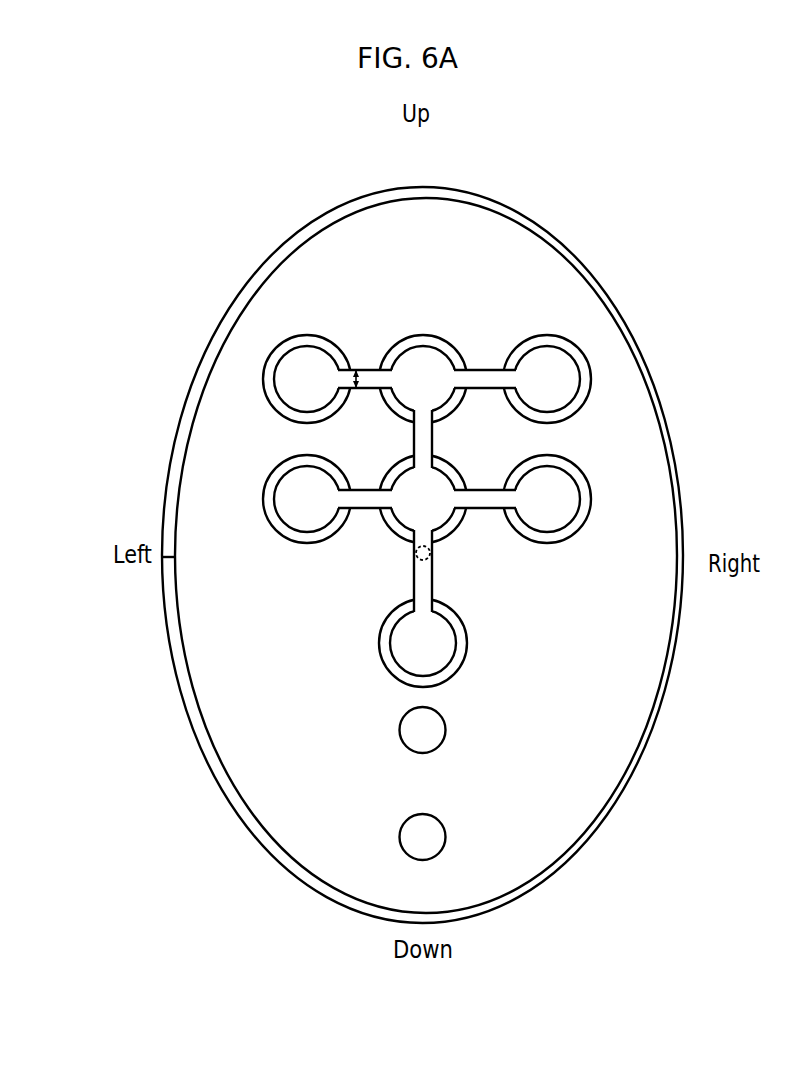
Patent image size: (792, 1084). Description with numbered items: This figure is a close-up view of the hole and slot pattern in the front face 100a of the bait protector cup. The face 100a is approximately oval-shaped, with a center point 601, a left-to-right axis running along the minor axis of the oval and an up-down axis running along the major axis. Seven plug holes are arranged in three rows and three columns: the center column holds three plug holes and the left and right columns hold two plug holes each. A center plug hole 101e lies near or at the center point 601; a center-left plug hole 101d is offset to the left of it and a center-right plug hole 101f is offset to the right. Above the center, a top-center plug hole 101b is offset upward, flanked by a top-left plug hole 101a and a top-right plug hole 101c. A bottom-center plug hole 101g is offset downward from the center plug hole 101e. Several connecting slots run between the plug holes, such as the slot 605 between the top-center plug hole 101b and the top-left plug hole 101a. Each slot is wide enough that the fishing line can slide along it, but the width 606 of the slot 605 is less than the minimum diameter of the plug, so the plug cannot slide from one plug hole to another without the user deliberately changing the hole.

The front face 100a is at (238, 722).
The top-left plug hole 101a is at (305, 372).
The top-center plug hole 101b is at (432, 368).
The top-right plug hole 101c is at (552, 373).
The center-left plug hole 101d is at (303, 492).
The center plug hole 101e is at (432, 490).
The center-right plug hole 101f is at (548, 490).
The bottom-center plug hole 101g is at (440, 645).
The center point 601 is at (430, 552).
The slot 605 is at (378, 380).
The width 606 is at (358, 373).